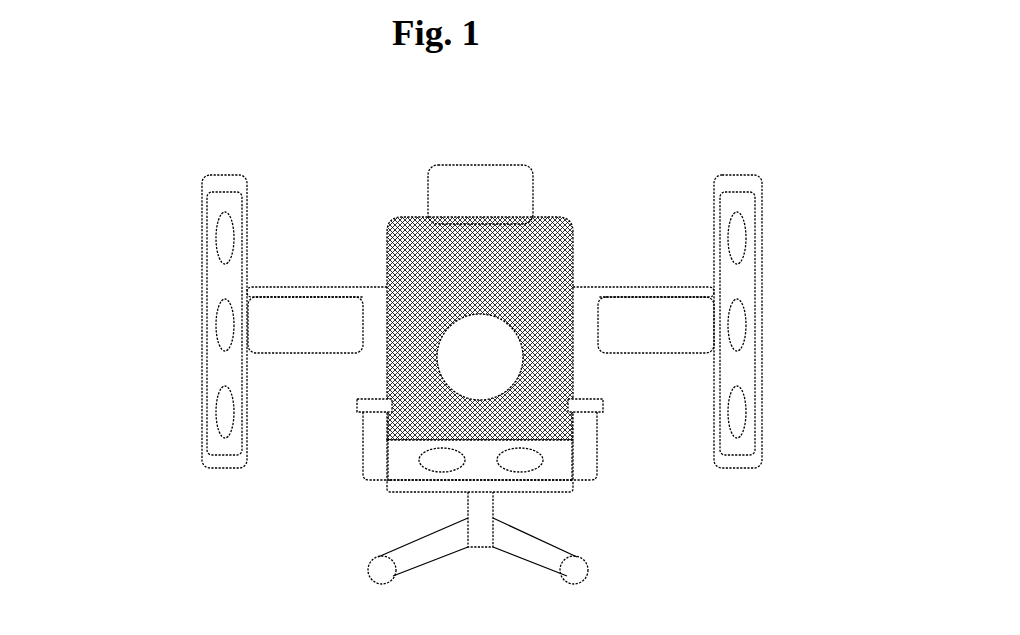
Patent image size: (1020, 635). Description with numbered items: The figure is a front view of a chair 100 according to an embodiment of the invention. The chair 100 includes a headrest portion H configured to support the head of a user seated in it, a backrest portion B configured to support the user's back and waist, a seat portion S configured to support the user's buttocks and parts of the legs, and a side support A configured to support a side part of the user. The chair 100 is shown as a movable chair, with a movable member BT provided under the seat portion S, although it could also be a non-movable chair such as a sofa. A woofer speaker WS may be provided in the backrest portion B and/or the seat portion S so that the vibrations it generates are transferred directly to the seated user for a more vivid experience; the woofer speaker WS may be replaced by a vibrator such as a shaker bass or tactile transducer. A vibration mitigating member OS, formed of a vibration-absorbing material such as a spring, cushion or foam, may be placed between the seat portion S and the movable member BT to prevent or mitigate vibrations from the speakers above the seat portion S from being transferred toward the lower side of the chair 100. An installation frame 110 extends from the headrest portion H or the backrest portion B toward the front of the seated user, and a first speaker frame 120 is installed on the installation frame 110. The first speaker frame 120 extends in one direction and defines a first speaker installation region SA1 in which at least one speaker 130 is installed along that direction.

The chair 100 is at (710, 121).
The installation frame 110 is at (668, 354).
The first speaker frame 120 is at (241, 468).
The speaker 130 is at (222, 232).
The first speaker installation region SA1 is at (216, 372).
The headrest portion H is at (522, 185).
The backrest portion B is at (563, 243).
The woofer speaker WS is at (453, 318).
The side support A is at (360, 404).
The seat portion S is at (390, 474).
The movable member BT is at (492, 512).
The vibration mitigating member OS is at (574, 490).